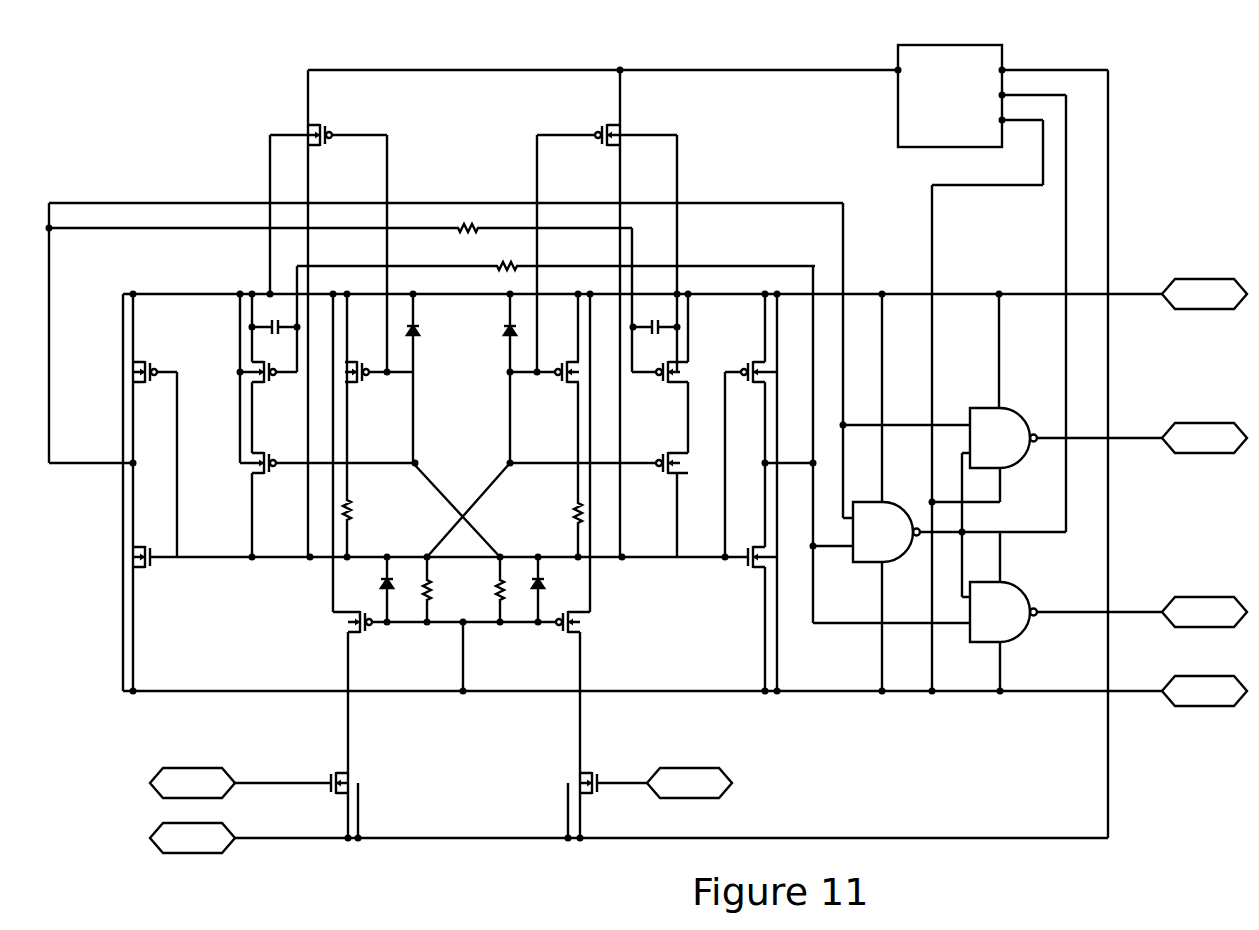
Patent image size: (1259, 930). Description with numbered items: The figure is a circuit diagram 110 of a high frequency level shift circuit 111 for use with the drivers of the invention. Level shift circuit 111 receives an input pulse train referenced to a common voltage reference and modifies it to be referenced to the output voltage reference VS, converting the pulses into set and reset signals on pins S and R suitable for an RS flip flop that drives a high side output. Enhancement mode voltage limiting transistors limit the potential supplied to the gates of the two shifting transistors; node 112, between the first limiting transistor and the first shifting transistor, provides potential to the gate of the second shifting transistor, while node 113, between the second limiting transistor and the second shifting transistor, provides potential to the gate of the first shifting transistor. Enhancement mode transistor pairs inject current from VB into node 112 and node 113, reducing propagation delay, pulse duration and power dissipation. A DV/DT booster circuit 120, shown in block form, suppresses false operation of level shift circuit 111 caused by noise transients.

The circuit diagram 110 is at (647, 460).
The level shift circuit 111 is at (150, 744).
The node 112 is at (421, 551).
The node 113 is at (505, 551).
The DV/DT booster circuit 120 is at (893, 122).